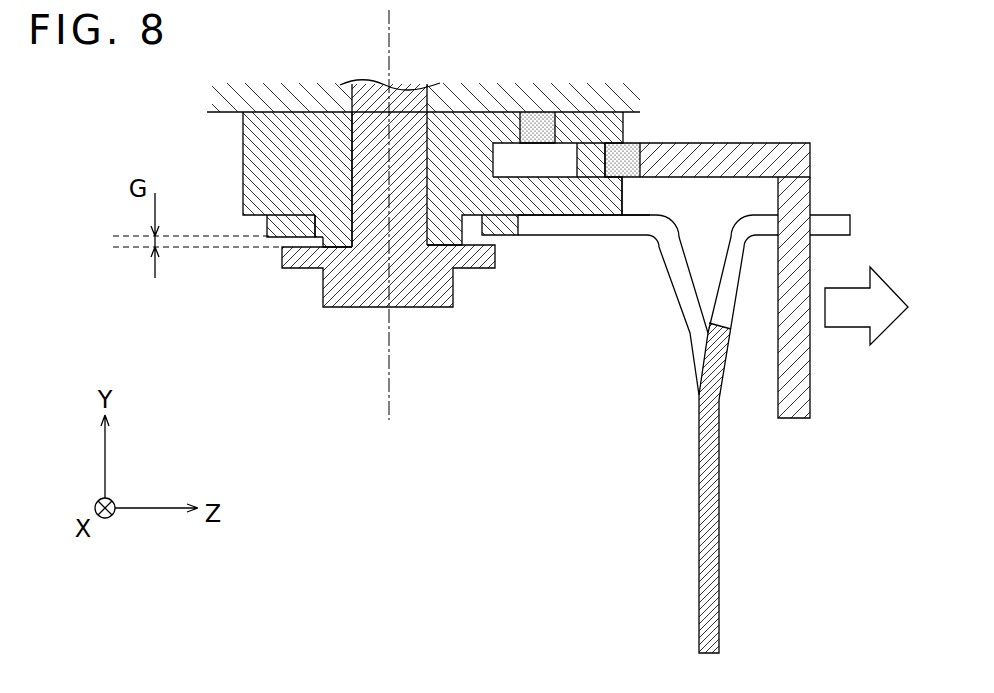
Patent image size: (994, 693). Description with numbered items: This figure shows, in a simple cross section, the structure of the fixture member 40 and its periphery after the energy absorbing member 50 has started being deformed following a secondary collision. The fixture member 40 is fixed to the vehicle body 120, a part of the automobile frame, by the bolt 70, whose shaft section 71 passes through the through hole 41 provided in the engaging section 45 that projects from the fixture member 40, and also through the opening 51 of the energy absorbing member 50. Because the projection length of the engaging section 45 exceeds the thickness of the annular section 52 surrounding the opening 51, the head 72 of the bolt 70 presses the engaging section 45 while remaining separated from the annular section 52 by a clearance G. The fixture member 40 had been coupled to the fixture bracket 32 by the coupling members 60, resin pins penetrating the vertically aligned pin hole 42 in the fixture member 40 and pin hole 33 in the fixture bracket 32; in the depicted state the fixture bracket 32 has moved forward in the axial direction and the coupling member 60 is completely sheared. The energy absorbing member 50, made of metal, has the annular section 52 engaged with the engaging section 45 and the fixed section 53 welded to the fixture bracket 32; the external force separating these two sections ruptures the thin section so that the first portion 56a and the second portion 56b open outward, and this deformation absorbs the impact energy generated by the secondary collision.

The fixture bracket 32 is at (757, 165).
The pin hole 33 is at (627, 182).
The fixture member 40 is at (441, 175).
The through hole 41 is at (353, 133).
The pin hole 42 is at (538, 120).
The engaging section 45 is at (325, 229).
The energy absorbing member 50 is at (678, 434).
The opening 51 is at (318, 238).
The annular section 52 is at (272, 228).
The fixed section 53 is at (822, 215).
The first portion 56a is at (725, 293).
The second portion 56b is at (687, 293).
The coupling member 60 is at (628, 157).
The bolt 70 is at (388, 215).
The shaft section 71 is at (407, 120).
The head 72 is at (418, 292).
The vehicle body 120 is at (612, 103).